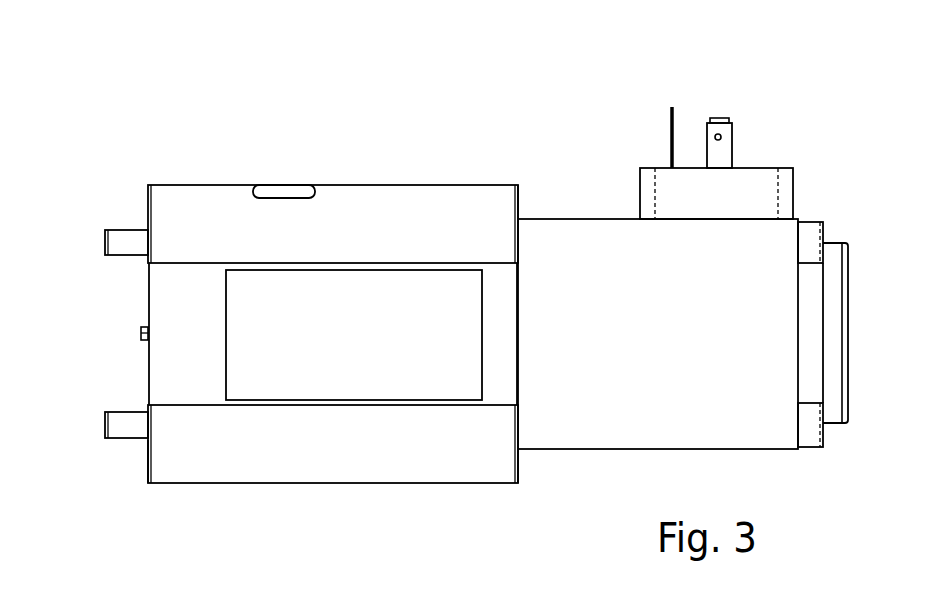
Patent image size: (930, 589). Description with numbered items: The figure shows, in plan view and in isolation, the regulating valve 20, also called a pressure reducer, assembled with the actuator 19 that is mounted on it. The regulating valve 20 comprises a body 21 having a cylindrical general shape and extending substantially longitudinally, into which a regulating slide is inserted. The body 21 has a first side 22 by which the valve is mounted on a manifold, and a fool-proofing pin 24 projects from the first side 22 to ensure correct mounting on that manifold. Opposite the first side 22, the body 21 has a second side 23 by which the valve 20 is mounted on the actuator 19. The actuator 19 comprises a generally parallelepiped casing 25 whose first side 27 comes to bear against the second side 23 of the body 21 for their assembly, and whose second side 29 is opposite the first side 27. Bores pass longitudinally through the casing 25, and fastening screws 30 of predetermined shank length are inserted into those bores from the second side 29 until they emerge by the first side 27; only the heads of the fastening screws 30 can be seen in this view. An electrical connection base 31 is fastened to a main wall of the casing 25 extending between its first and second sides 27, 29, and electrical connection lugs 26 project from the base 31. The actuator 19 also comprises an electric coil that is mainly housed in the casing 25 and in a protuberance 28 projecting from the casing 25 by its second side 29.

The actuator 19 is at (793, 90).
The regulating valve 20 is at (376, 106).
The body 21 is at (355, 454).
The first side 22 is at (145, 462).
The second side 23 is at (521, 472).
The fool-proofing pin 24 is at (141, 333).
The casing 25 is at (682, 351).
The electrical connection lugs 26 is at (708, 120).
The first side 27 is at (515, 236).
The protuberance 28 is at (830, 353).
The second side 29 is at (800, 312).
The fastening screws 30 is at (118, 245).
The electrical connection base 31 is at (732, 208).